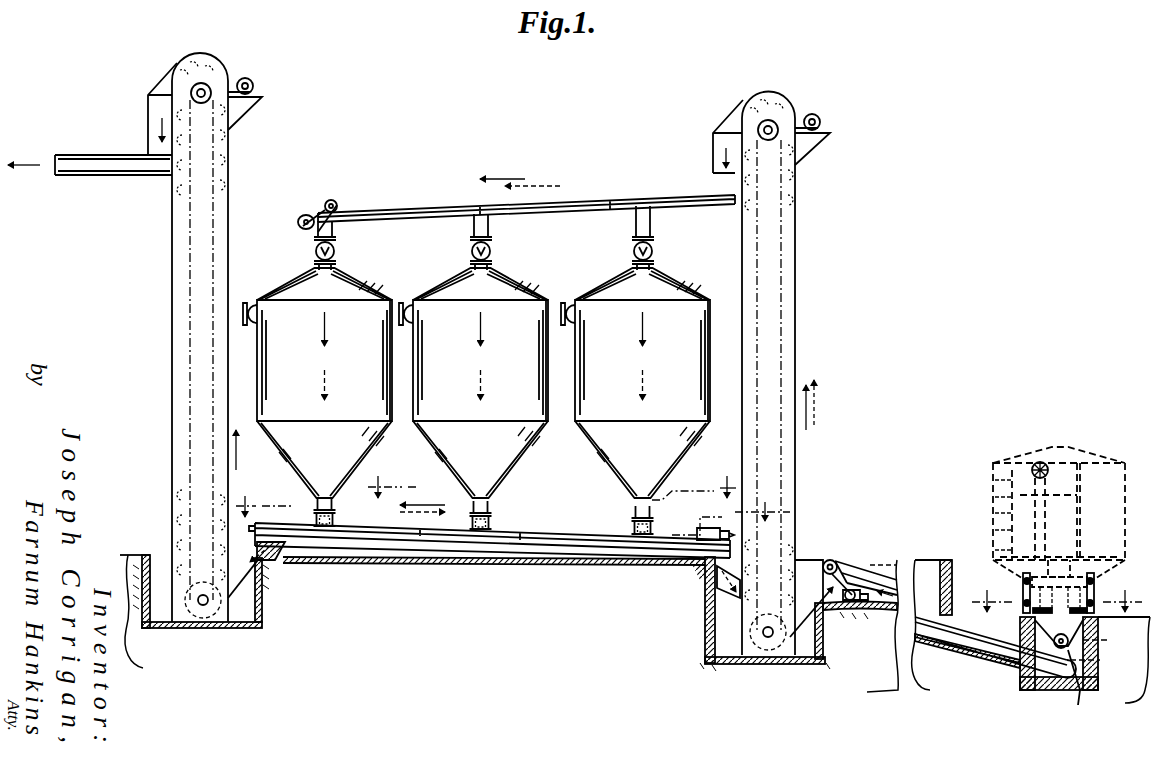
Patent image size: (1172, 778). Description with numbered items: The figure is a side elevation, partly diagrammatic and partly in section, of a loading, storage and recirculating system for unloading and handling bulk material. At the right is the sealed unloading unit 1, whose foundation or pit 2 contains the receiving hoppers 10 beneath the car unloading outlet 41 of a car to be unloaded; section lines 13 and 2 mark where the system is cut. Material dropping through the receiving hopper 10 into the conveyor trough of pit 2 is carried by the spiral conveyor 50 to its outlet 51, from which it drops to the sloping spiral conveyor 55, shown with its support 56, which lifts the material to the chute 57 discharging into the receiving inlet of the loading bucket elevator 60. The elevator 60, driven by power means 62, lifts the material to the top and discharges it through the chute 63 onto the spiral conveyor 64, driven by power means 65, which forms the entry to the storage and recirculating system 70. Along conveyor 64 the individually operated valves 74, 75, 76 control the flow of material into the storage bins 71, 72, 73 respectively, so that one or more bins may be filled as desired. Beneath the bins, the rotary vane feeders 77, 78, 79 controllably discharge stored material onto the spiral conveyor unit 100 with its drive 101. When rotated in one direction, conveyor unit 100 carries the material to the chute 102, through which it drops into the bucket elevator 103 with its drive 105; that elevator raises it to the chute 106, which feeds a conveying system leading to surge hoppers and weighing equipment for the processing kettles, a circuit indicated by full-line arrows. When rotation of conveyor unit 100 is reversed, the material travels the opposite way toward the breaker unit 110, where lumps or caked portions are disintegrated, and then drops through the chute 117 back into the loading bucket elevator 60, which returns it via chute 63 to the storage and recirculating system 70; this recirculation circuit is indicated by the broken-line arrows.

The sealed unloading unit 1 is at (968, 540).
The pit 2 is at (1108, 676).
The receiving hopper 10 is at (552, 478).
The section line 13 is at (511, 500).
The car unloading outlet 41 is at (1022, 582).
The spiral conveyor 50 is at (1098, 648).
The spiral conveyor outlet 51 is at (1084, 680).
The sloping spiral conveyor 55 is at (876, 568).
The conveyor support 56 is at (858, 612).
The chute 57 is at (811, 615).
The loading bucket elevator 60 is at (797, 496).
The power means 62 is at (820, 120).
The chute 63 is at (716, 155).
The spiral conveyor 64 is at (675, 200).
The power means 65 is at (334, 204).
The storage and recirculating system 70 is at (422, 180).
The storage bin 71 is at (360, 290).
The storage bin 72 is at (514, 288).
The storage bin 73 is at (676, 288).
The valve 74 is at (314, 252).
The valve 75 is at (470, 250).
The valve 76 is at (632, 250).
The rotary vane feeder 77 is at (316, 515).
The rotary vane feeder 78 is at (472, 519).
The rotary vane feeder 79 is at (633, 528).
The spiral conveyor unit 100 is at (372, 548).
The conveyor drive 101 is at (726, 528).
The chute 102 is at (244, 566).
The bucket elevator 103 is at (173, 497).
The elevator drive motor 105 is at (252, 88).
The chute 106 is at (150, 119).
The breaker unit 110 is at (690, 549).
The chute 117 is at (740, 596).